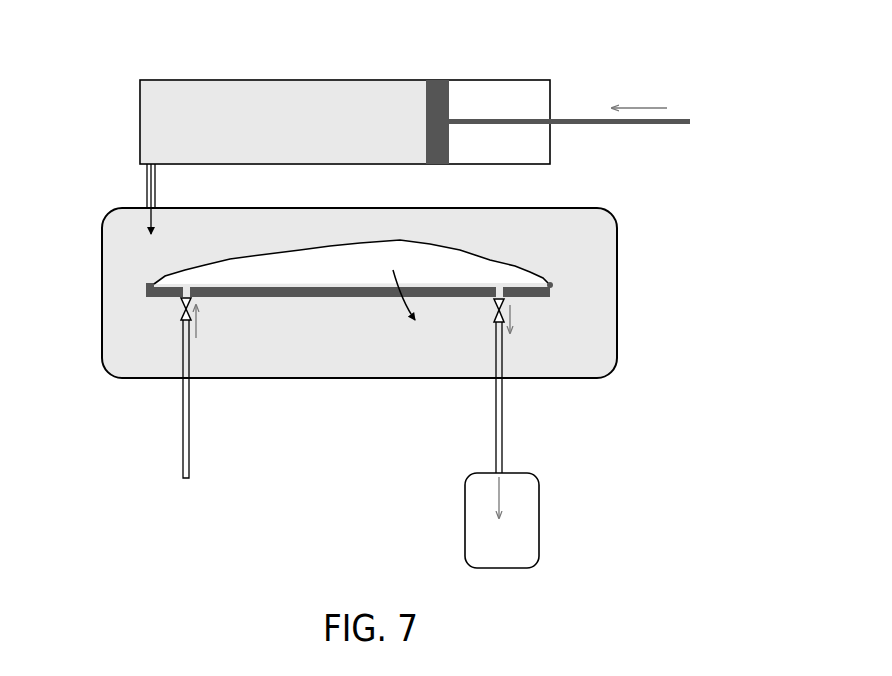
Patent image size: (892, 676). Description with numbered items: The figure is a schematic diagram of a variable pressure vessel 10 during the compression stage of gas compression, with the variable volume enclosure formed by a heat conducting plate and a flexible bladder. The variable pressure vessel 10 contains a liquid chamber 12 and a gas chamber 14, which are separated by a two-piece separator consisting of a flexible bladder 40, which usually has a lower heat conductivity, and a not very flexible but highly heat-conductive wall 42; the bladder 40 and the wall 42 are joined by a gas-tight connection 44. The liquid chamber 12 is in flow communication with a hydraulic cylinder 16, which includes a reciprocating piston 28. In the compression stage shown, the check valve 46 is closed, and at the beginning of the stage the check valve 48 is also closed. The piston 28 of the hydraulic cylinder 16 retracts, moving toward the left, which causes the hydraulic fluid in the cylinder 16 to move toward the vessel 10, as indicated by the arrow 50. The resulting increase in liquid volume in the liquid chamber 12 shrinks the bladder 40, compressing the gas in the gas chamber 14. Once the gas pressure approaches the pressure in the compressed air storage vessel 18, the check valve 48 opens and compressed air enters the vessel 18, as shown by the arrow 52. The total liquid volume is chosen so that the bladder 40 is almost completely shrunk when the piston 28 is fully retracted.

The variable pressure vessel 10 is at (605, 372).
The liquid chamber 12 is at (592, 326).
The gas chamber 14 is at (232, 277).
The hydraulic cylinder 16 is at (523, 79).
The compressed air storage vessel 18 is at (538, 530).
The piston 28 is at (451, 97).
The flexible bladder 40 is at (533, 262).
The heat-conductive wall 42 is at (313, 298).
The gas-tight connection 44 is at (147, 283).
The check valve 46 is at (182, 294).
The check valve 48 is at (515, 291).
The arrow 50 is at (155, 184).
The arrow 52 is at (500, 492).